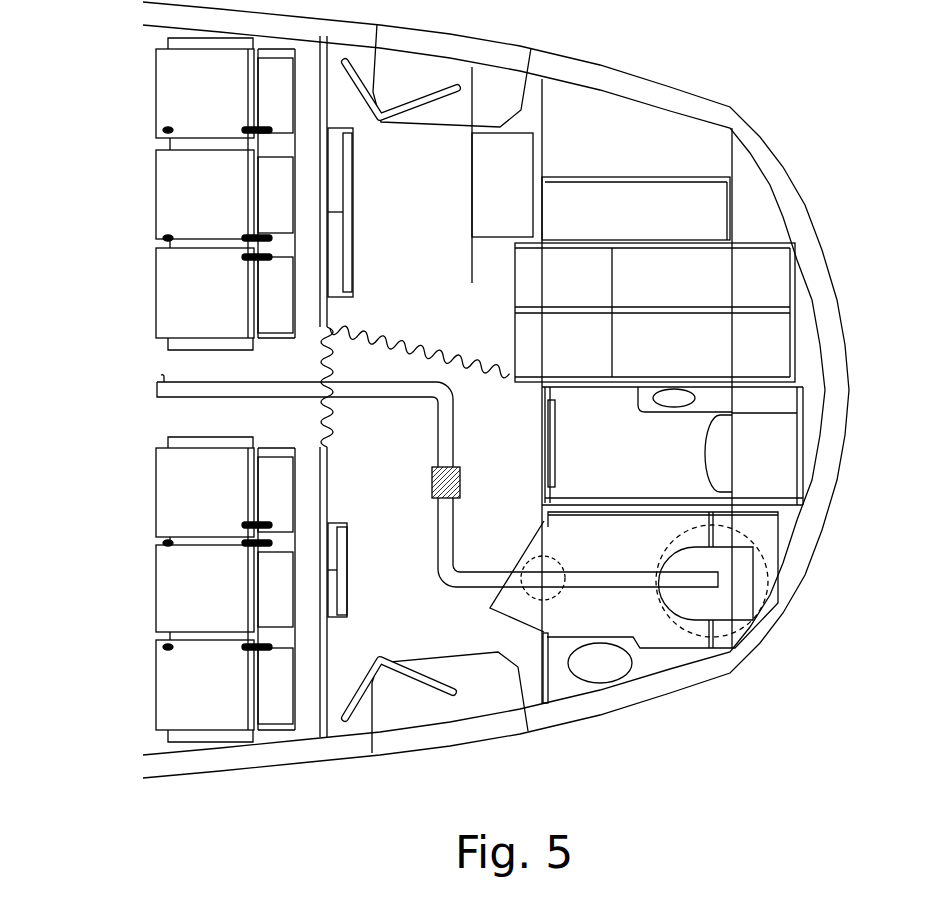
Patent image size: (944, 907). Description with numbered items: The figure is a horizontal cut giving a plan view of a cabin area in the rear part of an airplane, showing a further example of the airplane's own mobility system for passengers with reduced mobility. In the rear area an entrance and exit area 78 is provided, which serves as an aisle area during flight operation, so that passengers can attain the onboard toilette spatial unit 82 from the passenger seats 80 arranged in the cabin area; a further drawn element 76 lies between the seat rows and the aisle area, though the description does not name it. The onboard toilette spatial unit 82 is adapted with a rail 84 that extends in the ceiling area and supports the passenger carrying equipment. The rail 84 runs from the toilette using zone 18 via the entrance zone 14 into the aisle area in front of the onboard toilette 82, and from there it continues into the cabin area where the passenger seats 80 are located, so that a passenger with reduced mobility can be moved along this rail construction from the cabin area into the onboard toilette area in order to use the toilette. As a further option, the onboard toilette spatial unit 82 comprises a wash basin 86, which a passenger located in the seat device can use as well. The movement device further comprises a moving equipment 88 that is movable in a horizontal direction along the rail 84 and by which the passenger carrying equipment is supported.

The entrance zone 14 is at (592, 564).
The toilette using zone 18 is at (767, 587).
The flexible line section 76 is at (317, 330).
The entrance and exit area 78 is at (457, 635).
The passenger seats 80 is at (172, 495).
The onboard toilette spatial unit 82 is at (652, 564).
The rail 84 is at (633, 578).
The wash basin 86 is at (600, 683).
The moving equipment 88 is at (447, 483).